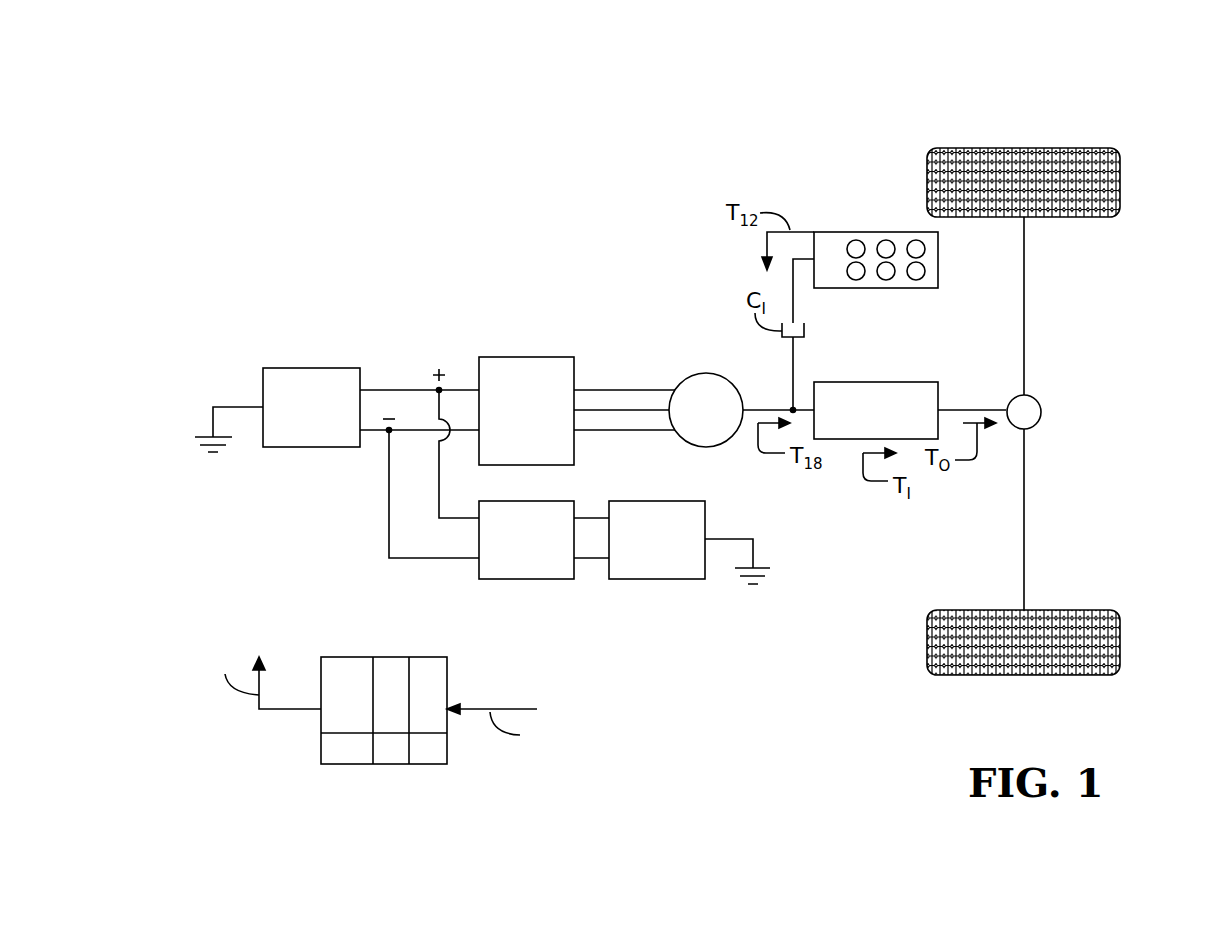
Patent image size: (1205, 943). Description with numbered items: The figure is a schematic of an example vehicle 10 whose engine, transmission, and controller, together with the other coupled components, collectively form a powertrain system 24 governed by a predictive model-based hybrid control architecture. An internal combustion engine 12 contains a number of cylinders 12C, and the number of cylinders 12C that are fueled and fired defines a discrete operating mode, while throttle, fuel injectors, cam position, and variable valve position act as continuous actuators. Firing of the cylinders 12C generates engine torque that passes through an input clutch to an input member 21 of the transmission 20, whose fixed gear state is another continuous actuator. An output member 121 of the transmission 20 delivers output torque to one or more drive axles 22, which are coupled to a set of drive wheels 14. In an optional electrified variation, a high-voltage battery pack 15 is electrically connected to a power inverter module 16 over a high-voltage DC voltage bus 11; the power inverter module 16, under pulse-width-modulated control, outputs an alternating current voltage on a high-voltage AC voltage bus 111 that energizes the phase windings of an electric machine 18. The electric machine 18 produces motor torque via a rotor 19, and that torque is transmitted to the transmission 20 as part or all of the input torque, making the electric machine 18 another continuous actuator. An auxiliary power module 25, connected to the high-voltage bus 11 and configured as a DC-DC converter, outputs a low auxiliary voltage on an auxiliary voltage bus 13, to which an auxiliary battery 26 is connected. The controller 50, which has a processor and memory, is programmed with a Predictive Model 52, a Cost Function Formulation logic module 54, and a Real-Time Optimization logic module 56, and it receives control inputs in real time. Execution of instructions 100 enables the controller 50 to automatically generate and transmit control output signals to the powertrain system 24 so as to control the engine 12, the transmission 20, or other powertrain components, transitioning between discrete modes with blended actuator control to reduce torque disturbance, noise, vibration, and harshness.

The vehicle 10 is at (1078, 92).
The powertrain system 24 is at (684, 176).
The drive wheels 14 is at (1120, 183).
The drive axles 22 is at (1024, 312).
The internal combustion engine 12 is at (869, 263).
The cylinders 12C is at (888, 271).
The high-voltage battery pack 15 is at (310, 368).
The high-voltage DC voltage bus 11 is at (416, 390).
The power inverter module 16 is at (530, 357).
The high-voltage AC voltage bus 111 is at (596, 390).
The electric machine 18 is at (706, 373).
The rotor 19 is at (760, 410).
The input member 21 is at (800, 410).
The transmission 20 is at (898, 382).
The output member 121 is at (958, 410).
The auxiliary power module 25 is at (502, 501).
The auxiliary voltage bus 13 is at (592, 518).
The auxiliary battery 26 is at (660, 501).
The controller 50 is at (383, 714).
The Predictive Model 52 is at (331, 693).
The Cost Function Formulation logic module 54 is at (392, 657).
The Real-Time Optimization logic module 56 is at (428, 657).
The instructions 100 is at (350, 749).